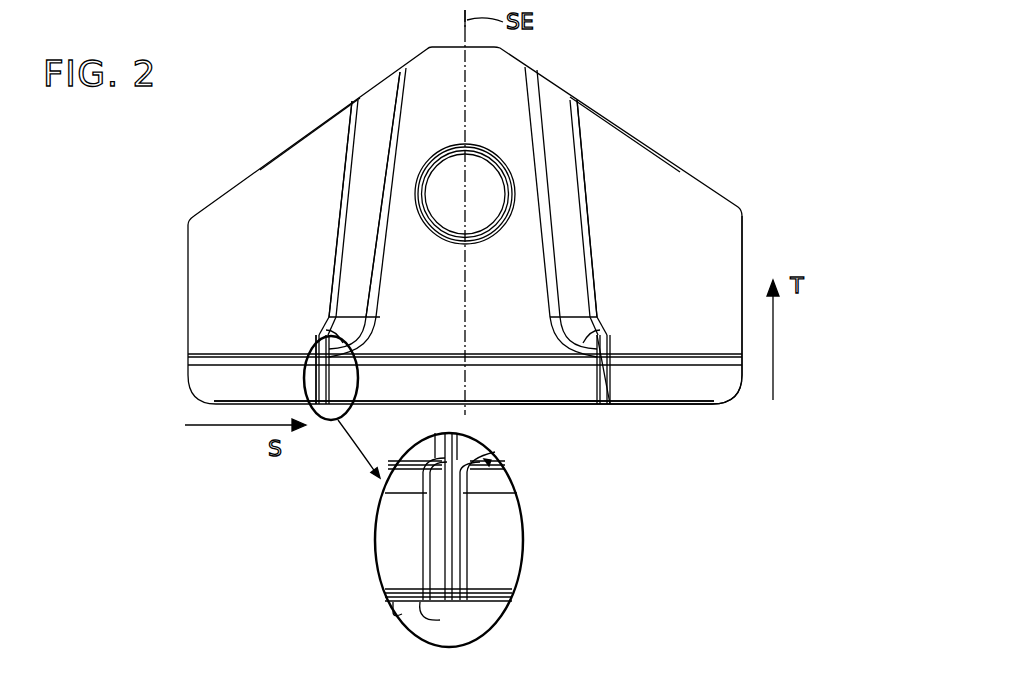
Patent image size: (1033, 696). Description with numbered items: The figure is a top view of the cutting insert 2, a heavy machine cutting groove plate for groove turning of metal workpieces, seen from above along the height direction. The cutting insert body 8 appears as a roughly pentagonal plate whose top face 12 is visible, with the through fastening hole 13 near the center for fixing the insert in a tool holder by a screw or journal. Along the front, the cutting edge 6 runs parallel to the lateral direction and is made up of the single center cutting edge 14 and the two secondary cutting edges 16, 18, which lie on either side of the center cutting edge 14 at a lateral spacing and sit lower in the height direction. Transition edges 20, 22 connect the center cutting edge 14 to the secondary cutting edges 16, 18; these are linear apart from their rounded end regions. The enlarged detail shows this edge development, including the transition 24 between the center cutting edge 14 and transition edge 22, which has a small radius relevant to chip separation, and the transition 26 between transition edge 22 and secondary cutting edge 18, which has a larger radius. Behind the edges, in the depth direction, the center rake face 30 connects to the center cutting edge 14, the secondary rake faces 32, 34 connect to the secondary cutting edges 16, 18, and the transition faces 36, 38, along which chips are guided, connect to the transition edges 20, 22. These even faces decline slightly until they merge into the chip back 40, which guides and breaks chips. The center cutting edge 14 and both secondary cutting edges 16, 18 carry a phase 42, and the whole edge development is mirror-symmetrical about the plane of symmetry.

The cutting insert 2 is at (730, 82).
The cutting edge 6 is at (529, 426).
The cutting insert body 8 is at (316, 133).
The top face 12 is at (613, 138).
The through fastening hole 13 is at (447, 175).
The center cutting edge 14 is at (500, 402).
The secondary cutting edge 16 is at (295, 404).
The secondary cutting edge 18 is at (665, 403).
The transition edge 20 is at (443, 607).
The transition edge 22 is at (595, 403).
The transition 24 is at (463, 570).
The transition 26 is at (430, 602).
The center rake face 30 is at (507, 380).
The secondary rake face 32 is at (245, 388).
The secondary rake face 34 is at (691, 386).
The transition face 36 is at (328, 377).
The transition face 38 is at (610, 382).
The chip back 40 is at (363, 317).
The phase 42 is at (697, 403).